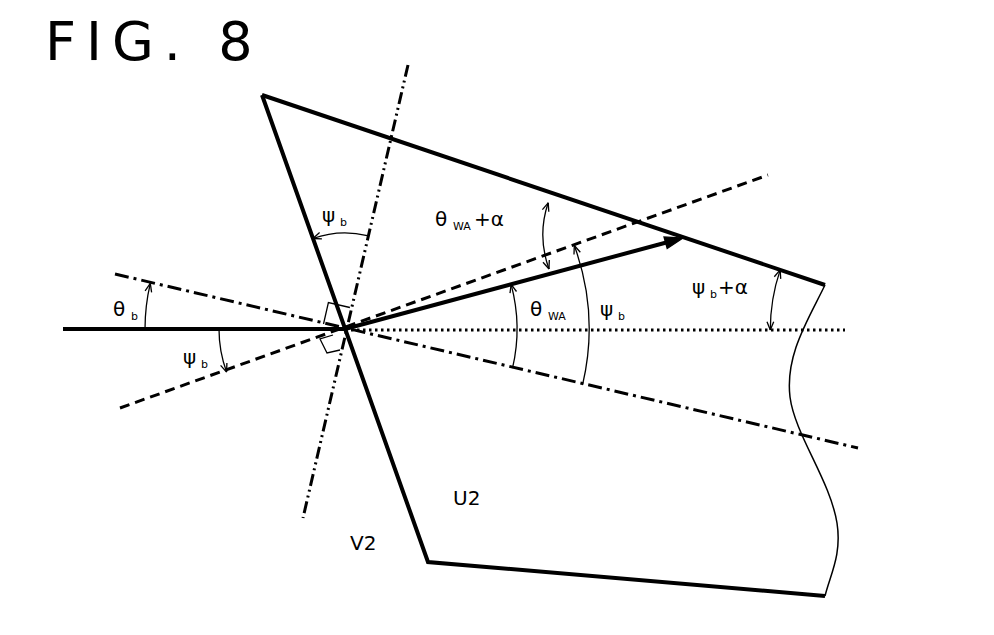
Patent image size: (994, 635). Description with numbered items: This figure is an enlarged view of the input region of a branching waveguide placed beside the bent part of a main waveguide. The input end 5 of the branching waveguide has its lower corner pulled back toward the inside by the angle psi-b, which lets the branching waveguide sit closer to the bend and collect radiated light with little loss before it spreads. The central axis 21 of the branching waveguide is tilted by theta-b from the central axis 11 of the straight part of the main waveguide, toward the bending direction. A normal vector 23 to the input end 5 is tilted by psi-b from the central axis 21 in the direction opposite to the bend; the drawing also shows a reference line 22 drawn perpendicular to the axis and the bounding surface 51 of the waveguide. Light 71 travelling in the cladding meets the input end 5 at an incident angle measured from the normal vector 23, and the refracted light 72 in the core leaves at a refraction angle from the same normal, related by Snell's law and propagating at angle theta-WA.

The input end 5 is at (397, 486).
The central axis 11 is at (830, 323).
The central axis 21 is at (840, 442).
The reference line 22 is at (400, 107).
The normal vector 23 is at (745, 183).
The prism surface 51 is at (480, 170).
The light 71 is at (107, 333).
The light 72 is at (615, 253).